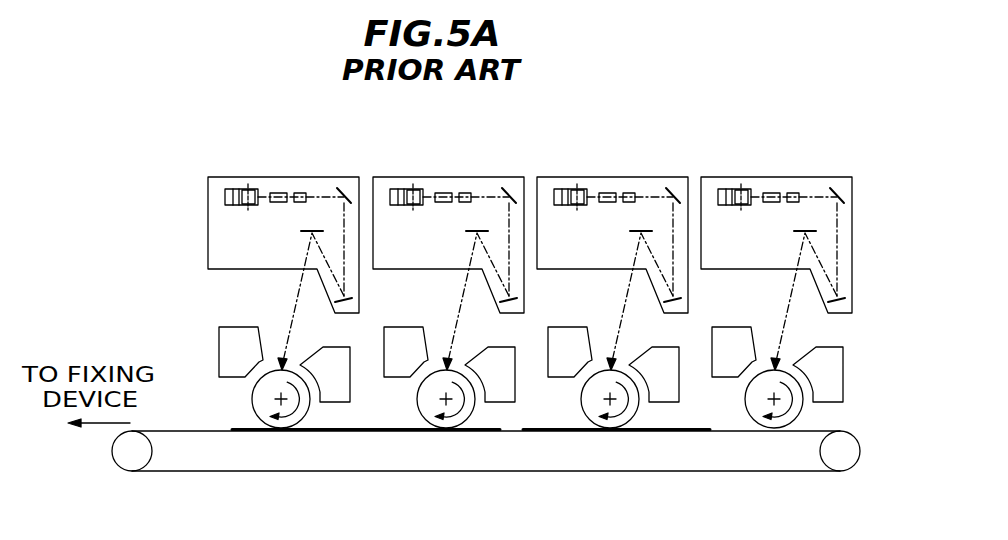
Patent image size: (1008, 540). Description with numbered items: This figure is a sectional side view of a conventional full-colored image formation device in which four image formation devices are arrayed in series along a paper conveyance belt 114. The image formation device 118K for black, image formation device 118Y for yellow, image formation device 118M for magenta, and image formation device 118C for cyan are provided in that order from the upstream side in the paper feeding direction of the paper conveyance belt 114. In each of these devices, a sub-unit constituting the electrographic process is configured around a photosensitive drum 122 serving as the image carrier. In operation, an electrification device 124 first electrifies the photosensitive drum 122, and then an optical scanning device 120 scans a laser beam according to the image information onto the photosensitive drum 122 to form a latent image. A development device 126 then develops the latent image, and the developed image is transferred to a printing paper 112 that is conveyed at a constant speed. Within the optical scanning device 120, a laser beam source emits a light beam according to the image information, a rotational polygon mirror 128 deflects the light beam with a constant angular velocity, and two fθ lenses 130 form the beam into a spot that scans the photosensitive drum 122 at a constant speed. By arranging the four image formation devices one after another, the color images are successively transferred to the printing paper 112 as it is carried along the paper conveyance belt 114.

The printing paper 112 is at (232, 428).
The paper conveyance belt 114 is at (822, 428).
The image formation device 118C is at (283, 229).
The image formation device 118M is at (448, 229).
The image formation device 118Y is at (612, 229).
The image formation device 118K is at (776, 229).
The optical scanning device 120 is at (478, 165).
The photosensitive drum 122 is at (485, 449).
The electrification device 124 is at (474, 331).
The development device 126 is at (569, 359).
The rotational polygon mirror 128 is at (495, 167).
The fθ lenses 130 is at (513, 228).